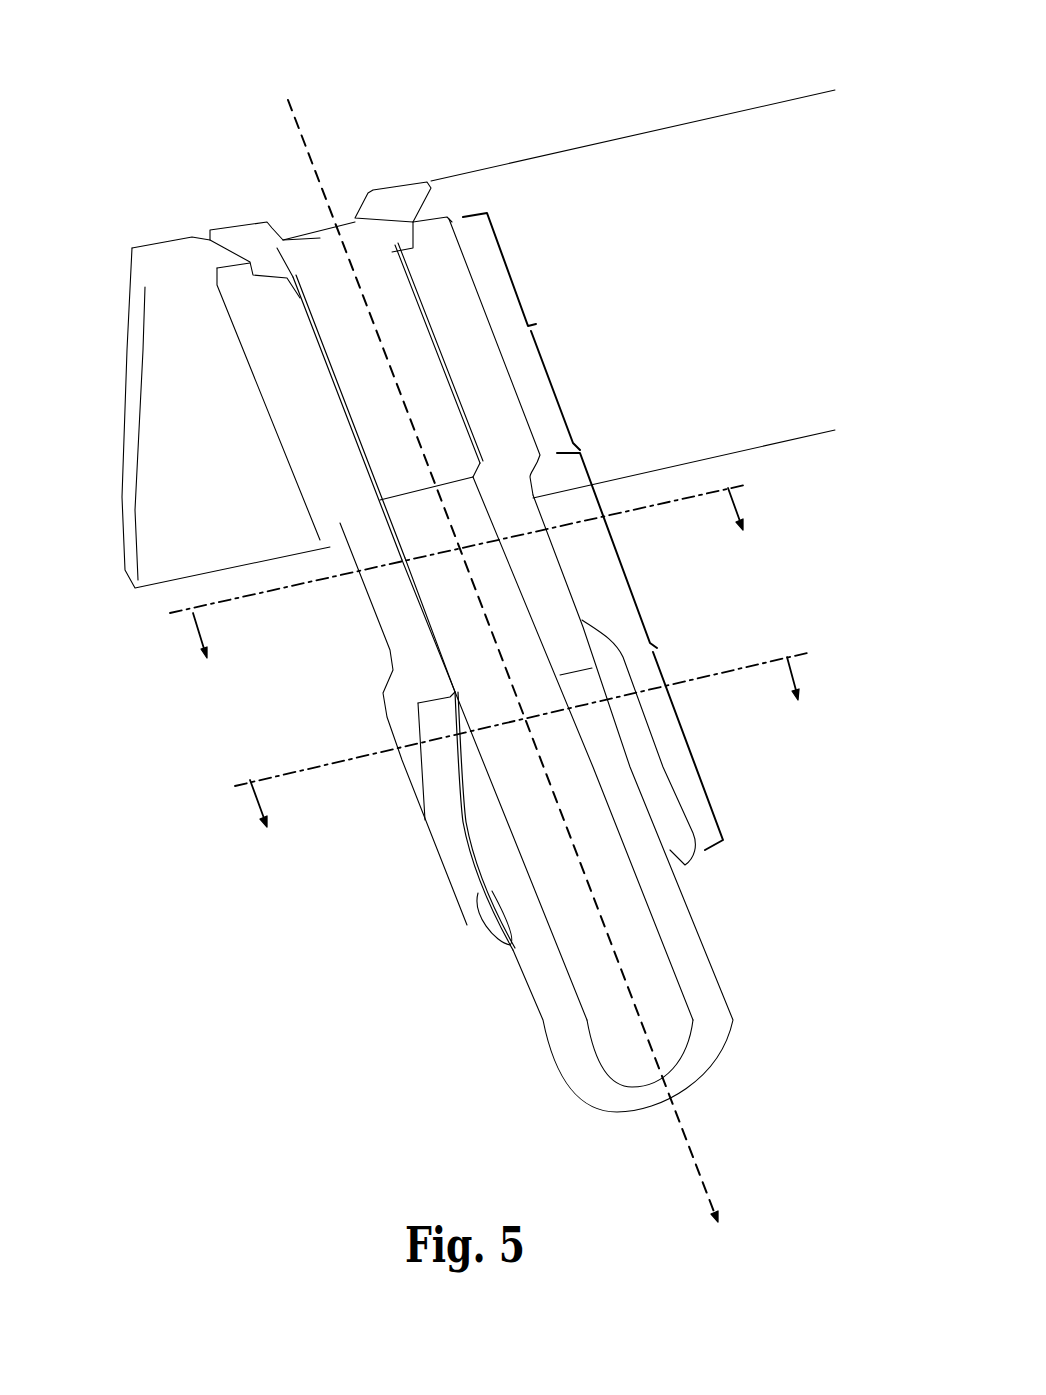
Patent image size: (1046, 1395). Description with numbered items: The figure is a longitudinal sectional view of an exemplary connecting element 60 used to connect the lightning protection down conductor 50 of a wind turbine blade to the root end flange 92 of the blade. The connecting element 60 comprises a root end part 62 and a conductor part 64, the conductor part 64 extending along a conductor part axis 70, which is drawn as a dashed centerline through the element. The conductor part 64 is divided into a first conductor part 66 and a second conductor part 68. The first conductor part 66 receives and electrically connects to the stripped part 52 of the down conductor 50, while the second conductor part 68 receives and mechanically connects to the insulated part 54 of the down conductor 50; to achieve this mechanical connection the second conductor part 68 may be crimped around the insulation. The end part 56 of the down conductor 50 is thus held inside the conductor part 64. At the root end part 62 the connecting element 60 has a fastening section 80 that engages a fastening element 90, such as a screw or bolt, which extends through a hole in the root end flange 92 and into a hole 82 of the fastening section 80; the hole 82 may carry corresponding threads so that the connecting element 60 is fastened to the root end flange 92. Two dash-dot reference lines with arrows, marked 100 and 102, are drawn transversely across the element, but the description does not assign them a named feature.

The down conductor 50 is at (528, 990).
The stripped part 52 is at (493, 603).
The insulated part 54 is at (523, 954).
The end part of the down conductor 56 is at (633, 822).
The connecting element 60 is at (188, 727).
The root end part 62 is at (536, 324).
The conductor part 64 is at (652, 646).
The first conductor part 66 is at (413, 643).
The second conductor part 68 is at (448, 823).
The conductor part axis 70 is at (687, 1149).
The fastening section 80 is at (333, 267).
The hole 82 is at (322, 283).
The fastening element 90 is at (388, 207).
The root end flange 92 is at (628, 163).
The first direction 100 is at (492, 563).
The second direction 102 is at (549, 729).